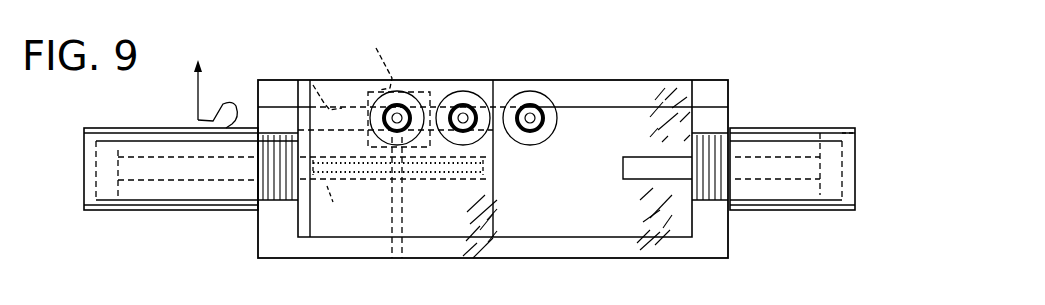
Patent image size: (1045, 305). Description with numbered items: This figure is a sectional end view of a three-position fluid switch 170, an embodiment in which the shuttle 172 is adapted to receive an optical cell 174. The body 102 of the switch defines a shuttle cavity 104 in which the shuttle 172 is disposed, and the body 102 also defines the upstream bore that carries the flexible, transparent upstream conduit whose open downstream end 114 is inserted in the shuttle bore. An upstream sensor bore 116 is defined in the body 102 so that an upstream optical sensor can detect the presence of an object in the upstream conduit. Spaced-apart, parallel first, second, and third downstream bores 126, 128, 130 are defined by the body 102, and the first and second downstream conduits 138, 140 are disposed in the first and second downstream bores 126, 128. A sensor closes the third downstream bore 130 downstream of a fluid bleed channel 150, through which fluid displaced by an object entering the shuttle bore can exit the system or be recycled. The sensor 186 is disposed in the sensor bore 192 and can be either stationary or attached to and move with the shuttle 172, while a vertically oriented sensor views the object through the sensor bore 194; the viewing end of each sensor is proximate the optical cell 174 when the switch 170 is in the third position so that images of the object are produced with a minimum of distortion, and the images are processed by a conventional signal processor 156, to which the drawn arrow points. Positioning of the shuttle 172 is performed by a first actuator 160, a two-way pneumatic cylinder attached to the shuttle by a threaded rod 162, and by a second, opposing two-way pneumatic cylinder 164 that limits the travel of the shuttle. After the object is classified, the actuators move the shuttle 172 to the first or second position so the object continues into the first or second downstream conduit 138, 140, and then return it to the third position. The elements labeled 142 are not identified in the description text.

The body 102 is at (716, 79).
The shuttle cavity 104 is at (560, 237).
The open downstream end 114 is at (408, 108).
The upstream sensor bore 116 is at (633, 110).
The first downstream bore 126 is at (536, 103).
The second downstream bore 128 is at (478, 108).
The third downstream bore 130 is at (392, 106).
The first downstream conduit 138 is at (543, 122).
The second downstream conduit 140 is at (456, 104).
The spring 142 is at (362, 142).
The fluid bleed channel 150 is at (397, 258).
The signal processor 156 is at (202, 76).
The first actuator 160 is at (157, 128).
The threaded rod 162 is at (336, 211).
The second two-way pneumatic cylinder 164 is at (772, 128).
The three-position switch 170 is at (686, 49).
The shuttle 172 is at (495, 198).
The optical cell 174 is at (366, 99).
The sensor 186 is at (222, 103).
The sensor bore 192 is at (313, 80).
The sensor bore 194 is at (376, 58).